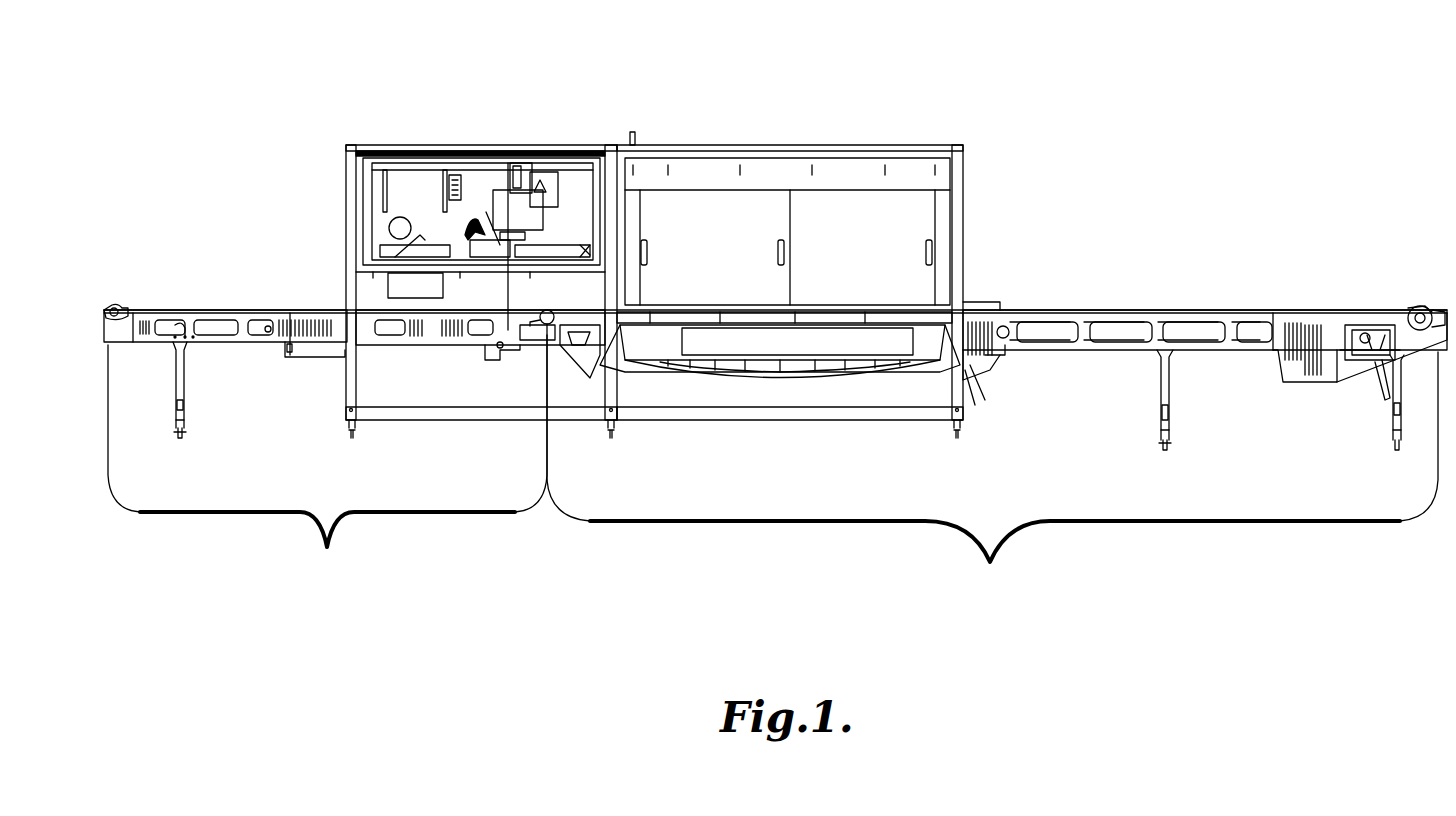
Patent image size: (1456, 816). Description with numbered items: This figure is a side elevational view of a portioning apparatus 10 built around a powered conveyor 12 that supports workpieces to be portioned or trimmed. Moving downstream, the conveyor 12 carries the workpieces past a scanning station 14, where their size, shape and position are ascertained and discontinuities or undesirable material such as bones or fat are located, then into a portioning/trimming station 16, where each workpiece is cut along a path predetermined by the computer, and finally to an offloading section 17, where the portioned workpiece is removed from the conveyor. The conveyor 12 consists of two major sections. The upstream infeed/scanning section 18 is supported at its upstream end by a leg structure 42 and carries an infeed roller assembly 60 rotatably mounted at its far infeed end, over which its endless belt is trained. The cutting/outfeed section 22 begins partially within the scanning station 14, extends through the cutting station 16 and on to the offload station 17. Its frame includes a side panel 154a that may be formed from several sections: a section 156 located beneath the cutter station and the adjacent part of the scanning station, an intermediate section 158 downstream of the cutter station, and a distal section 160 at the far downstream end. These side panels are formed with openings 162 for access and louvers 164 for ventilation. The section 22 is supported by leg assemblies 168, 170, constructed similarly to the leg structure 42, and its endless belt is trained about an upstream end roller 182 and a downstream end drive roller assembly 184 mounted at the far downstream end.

The portioning apparatus 10 is at (180, 59).
The powered conveyor 12 is at (228, 272).
The scanning station 14 is at (412, 130).
The portioning/trimming station 16 is at (806, 130).
The offloading section 17 is at (1248, 215).
The infeed/scanning section 18 is at (327, 456).
The cutting/outfeed section 22 is at (992, 470).
The leg structure 42 is at (197, 413).
The infeed roller assembly 60 is at (118, 310).
The side panel 154a is at (1252, 350).
The side panel section 156 is at (697, 378).
The intermediate section 158 is at (1036, 350).
The distal section 160 is at (1315, 382).
The openings 162 is at (1117, 350).
The louvers 164 is at (1337, 370).
The leg assembly 168 is at (1400, 410).
The leg assembly 170 is at (1170, 405).
The upstream end roller 182 is at (545, 335).
The downstream end drive roller assembly 184 is at (1415, 300).